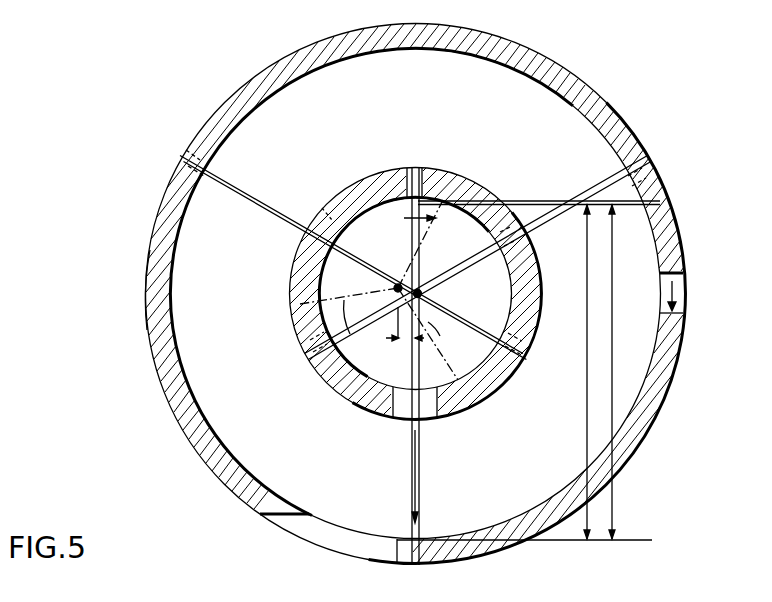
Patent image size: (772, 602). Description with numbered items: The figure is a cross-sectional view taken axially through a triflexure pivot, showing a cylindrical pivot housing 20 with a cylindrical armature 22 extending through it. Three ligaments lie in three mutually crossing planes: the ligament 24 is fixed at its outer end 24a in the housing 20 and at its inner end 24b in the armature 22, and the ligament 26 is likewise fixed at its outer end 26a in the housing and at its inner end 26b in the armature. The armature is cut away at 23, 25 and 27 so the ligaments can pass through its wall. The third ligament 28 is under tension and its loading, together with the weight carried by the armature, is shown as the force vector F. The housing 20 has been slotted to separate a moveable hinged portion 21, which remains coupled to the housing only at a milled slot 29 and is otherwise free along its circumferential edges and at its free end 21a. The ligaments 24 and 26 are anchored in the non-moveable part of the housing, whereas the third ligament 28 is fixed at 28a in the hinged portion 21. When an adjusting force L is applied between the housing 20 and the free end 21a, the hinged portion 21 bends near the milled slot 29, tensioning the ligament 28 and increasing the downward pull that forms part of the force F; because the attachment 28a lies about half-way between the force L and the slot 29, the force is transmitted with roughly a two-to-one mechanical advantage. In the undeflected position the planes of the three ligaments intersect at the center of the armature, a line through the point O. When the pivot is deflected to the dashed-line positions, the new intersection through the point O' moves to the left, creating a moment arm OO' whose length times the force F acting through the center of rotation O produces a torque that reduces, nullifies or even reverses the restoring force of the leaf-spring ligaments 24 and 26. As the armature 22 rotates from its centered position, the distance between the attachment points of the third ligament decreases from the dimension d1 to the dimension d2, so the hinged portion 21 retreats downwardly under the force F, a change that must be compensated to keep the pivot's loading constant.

The pivot housing 20 is at (436, 38).
The hinged portion 21 is at (528, 541).
The free end 21a is at (684, 337).
The armature 22 is at (386, 168).
The cut-away 23 is at (325, 205).
The ligament 24 is at (210, 174).
The outer end 24a is at (192, 163).
The inner end 24b is at (522, 344).
The cut-away 25 is at (529, 242).
The ligament 26 is at (588, 188).
The outer end 26a is at (655, 162).
The inner end 26b is at (312, 352).
The cut-away 27 is at (427, 406).
The third ligament 28 is at (420, 470).
The outer end of third ligament 28a is at (410, 566).
The milled slot 29 is at (152, 300).
The adjusting force L is at (677, 292).
The loading force F is at (412, 482).
The dimension d1 is at (612, 256).
The dimension d2 is at (588, 330).
The center of rotation O is at (422, 278).
The deflected intersection point O' is at (379, 290).
The moment arm OO' is at (379, 349).